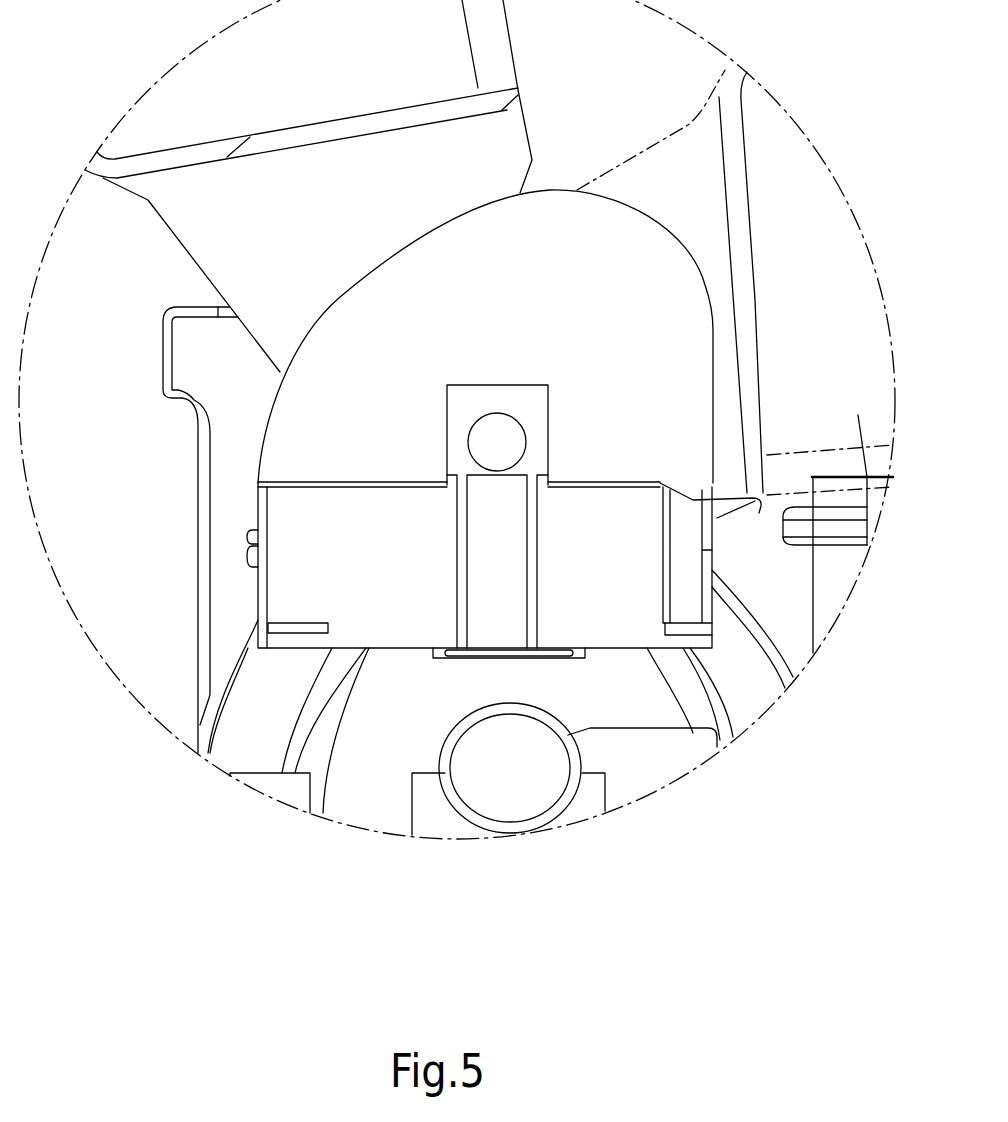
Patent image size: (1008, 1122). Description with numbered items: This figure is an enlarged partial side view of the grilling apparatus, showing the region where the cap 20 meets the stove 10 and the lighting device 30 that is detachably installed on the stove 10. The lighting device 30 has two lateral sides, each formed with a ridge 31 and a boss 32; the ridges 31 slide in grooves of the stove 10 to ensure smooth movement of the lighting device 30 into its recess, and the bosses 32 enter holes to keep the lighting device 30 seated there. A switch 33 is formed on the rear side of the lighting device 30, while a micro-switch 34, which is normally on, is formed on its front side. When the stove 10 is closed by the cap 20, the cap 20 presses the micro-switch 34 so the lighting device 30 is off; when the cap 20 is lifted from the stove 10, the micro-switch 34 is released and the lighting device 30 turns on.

The stove 10 is at (325, 870).
The cap 20 is at (517, 137).
The lighting device 30 is at (218, 433).
The ridge 31 is at (493, 518).
The boss 32 is at (490, 441).
The switch 33 is at (247, 548).
The micro-switch 34 is at (725, 513).